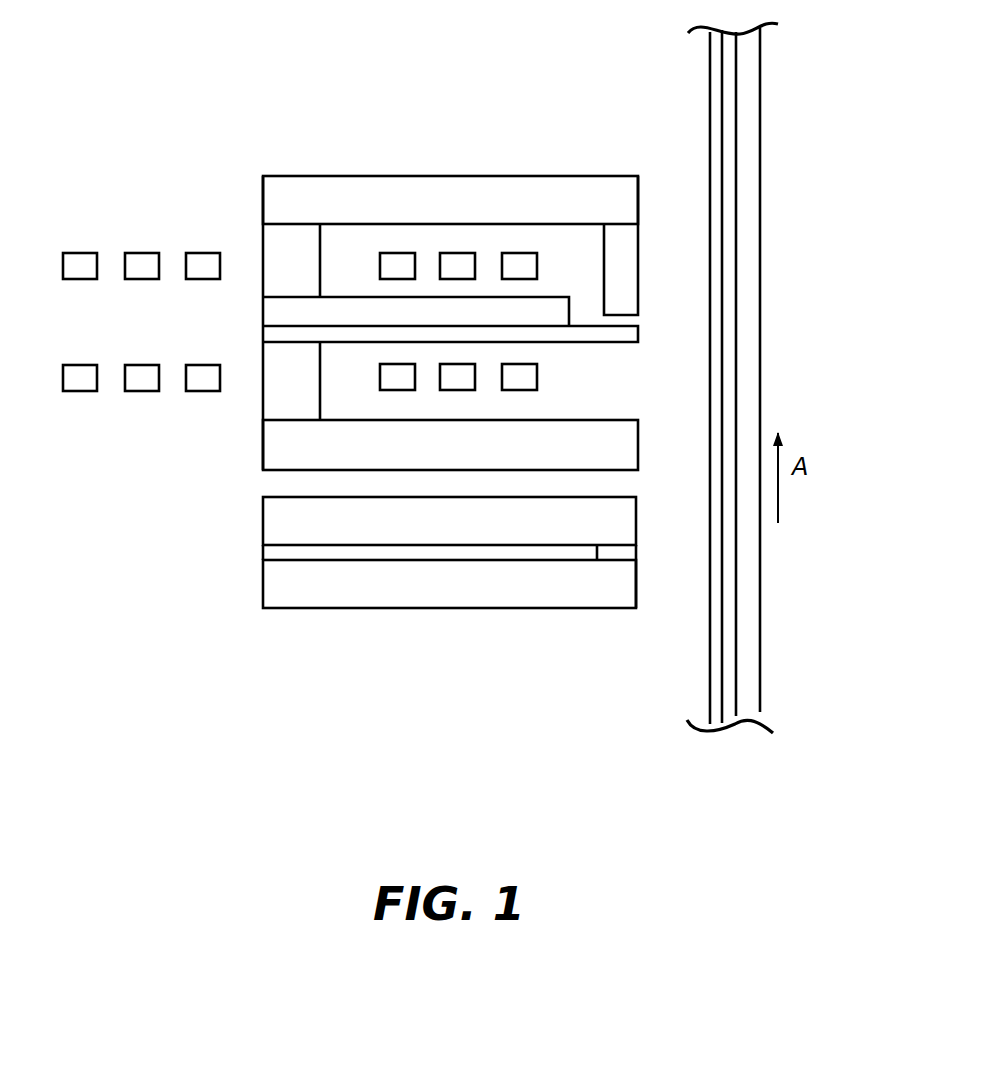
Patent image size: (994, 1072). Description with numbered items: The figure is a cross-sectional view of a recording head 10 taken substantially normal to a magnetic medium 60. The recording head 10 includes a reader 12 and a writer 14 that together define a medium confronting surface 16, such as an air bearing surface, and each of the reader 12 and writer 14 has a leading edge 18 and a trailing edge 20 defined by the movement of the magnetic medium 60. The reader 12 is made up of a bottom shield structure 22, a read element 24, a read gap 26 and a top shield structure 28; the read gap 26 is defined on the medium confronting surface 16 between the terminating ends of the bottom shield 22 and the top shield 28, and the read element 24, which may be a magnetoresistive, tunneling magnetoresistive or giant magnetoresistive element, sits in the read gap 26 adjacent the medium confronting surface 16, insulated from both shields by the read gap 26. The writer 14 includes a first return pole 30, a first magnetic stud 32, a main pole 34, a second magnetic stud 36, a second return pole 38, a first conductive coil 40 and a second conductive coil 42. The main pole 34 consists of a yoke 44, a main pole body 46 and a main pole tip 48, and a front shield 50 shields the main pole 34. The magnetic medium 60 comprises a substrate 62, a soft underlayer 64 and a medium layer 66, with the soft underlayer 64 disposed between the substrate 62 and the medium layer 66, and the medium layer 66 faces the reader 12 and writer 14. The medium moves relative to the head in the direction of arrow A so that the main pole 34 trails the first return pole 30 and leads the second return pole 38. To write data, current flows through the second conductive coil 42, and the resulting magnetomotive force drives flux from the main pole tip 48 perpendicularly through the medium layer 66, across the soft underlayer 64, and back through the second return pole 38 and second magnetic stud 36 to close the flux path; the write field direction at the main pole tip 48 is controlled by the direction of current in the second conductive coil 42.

The recording head 10 is at (183, 108).
The reader 12 is at (228, 538).
The writer 14 is at (248, 220).
The medium confronting surface 16 is at (643, 193).
The leading edge 18 is at (547, 633).
The trailing edge 20 is at (590, 157).
The bottom shield structure 22 is at (273, 587).
The read element 24 is at (625, 553).
The read gap 26 is at (260, 553).
The top shield structure 28 is at (273, 515).
The first return pole 30 is at (277, 442).
The first magnetic stud 32 is at (272, 395).
The main pole 34 is at (247, 297).
The second magnetic stud 36 is at (283, 268).
The second return pole 38 is at (273, 193).
The first conductive coil 40 is at (118, 393).
The second conductive coil 42 is at (120, 245).
The yoke 44 is at (380, 315).
The main pole body 46 is at (368, 337).
The main pole tip 48 is at (617, 335).
The front shield 50 is at (623, 285).
The magnetic medium 60 is at (765, 374).
The substrate 62 is at (748, 178).
The soft underlayer 64 is at (730, 228).
The medium layer 66 is at (717, 285).